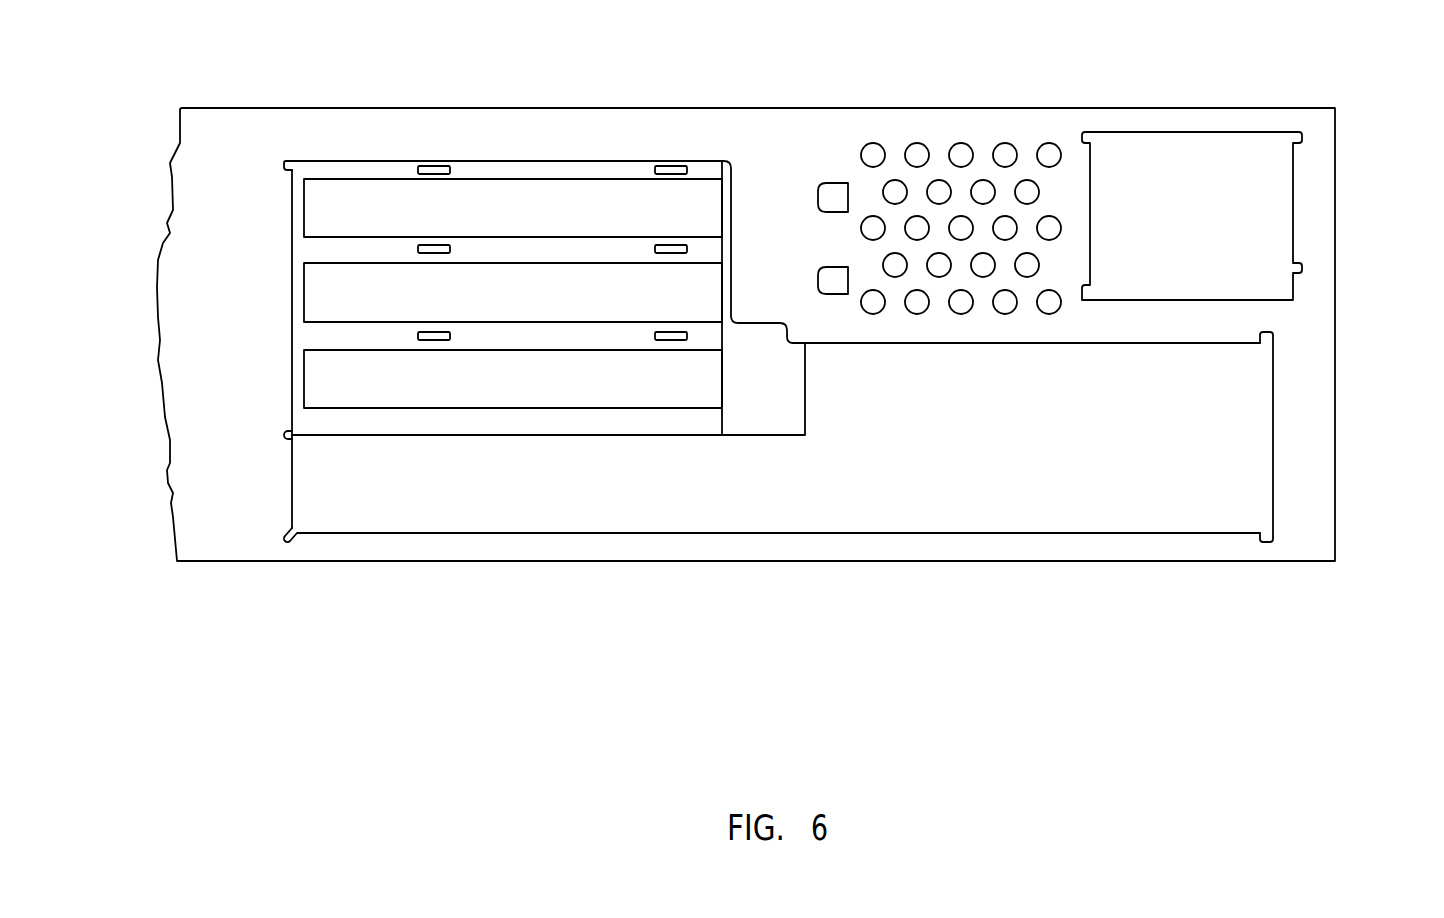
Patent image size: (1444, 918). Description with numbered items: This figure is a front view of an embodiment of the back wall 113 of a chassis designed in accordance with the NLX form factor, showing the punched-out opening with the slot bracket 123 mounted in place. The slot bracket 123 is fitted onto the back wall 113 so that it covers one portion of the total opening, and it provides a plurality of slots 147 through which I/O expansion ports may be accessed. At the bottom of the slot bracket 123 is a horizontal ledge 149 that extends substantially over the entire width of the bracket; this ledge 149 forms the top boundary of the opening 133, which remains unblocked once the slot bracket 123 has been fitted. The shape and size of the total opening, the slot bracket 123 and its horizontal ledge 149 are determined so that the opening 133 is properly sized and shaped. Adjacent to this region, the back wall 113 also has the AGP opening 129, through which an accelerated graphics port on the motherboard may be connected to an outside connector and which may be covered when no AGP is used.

The back wall 113 is at (754, 187).
The slot bracket 123 is at (332, 335).
The slots 147 is at (325, 212).
The horizontal ledge 149 is at (337, 419).
The opening 133 is at (1212, 403).
The AGP opening 129 is at (1252, 208).